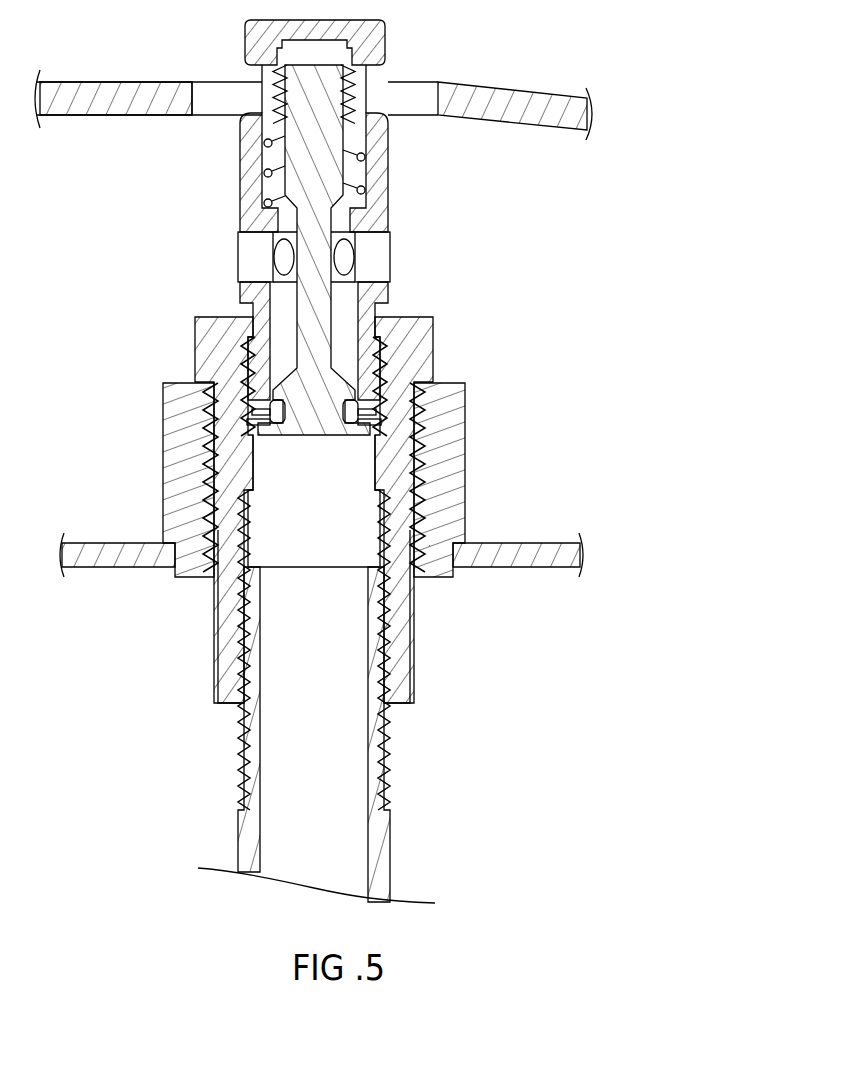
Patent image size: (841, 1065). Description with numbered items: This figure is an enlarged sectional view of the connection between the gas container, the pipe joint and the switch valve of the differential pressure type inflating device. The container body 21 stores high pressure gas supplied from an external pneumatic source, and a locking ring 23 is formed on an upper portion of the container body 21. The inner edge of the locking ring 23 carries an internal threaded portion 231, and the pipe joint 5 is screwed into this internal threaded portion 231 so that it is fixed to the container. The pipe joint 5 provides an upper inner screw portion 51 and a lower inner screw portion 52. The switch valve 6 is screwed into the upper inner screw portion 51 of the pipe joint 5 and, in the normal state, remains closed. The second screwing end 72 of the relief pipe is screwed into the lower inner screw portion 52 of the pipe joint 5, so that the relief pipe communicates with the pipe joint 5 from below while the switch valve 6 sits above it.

The switch valve 6 is at (395, 224).
The pipe joint 5 is at (397, 555).
The upper inner screw portion 51 is at (386, 350).
The lower inner screw portion 52 is at (388, 643).
The locking ring 23 is at (390, 480).
The internal threaded portion 231 is at (423, 477).
The container body 21 is at (537, 543).
The second screwing end 72 is at (378, 735).